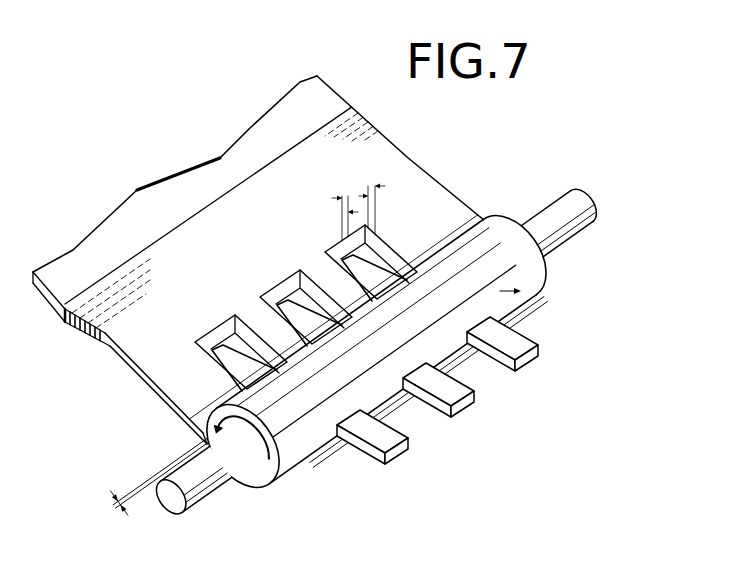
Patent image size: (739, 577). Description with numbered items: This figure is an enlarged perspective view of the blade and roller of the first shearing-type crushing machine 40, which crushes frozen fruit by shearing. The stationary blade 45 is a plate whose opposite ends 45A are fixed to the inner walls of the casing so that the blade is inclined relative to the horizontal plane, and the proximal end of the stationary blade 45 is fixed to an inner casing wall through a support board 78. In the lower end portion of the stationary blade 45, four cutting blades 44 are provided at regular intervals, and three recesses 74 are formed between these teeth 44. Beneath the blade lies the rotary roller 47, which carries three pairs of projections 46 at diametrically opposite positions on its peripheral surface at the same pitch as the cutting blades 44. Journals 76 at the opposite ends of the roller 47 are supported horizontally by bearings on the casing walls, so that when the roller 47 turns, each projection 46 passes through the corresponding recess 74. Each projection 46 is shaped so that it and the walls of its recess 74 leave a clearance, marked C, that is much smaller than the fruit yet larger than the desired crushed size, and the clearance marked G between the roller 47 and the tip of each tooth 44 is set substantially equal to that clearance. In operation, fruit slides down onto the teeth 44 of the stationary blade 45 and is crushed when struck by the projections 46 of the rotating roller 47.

The first shearing-type crushing machine 40 is at (438, 164).
The cutting blades 44 is at (460, 222).
The stationary blade 45 is at (212, 229).
The opposite ends of the stationary blade 45A is at (407, 157).
The projections 46 is at (235, 362).
The rotary roller 47 is at (340, 248).
The recesses 74 is at (207, 342).
The journals 76 is at (587, 226).
The support board 78 is at (97, 267).